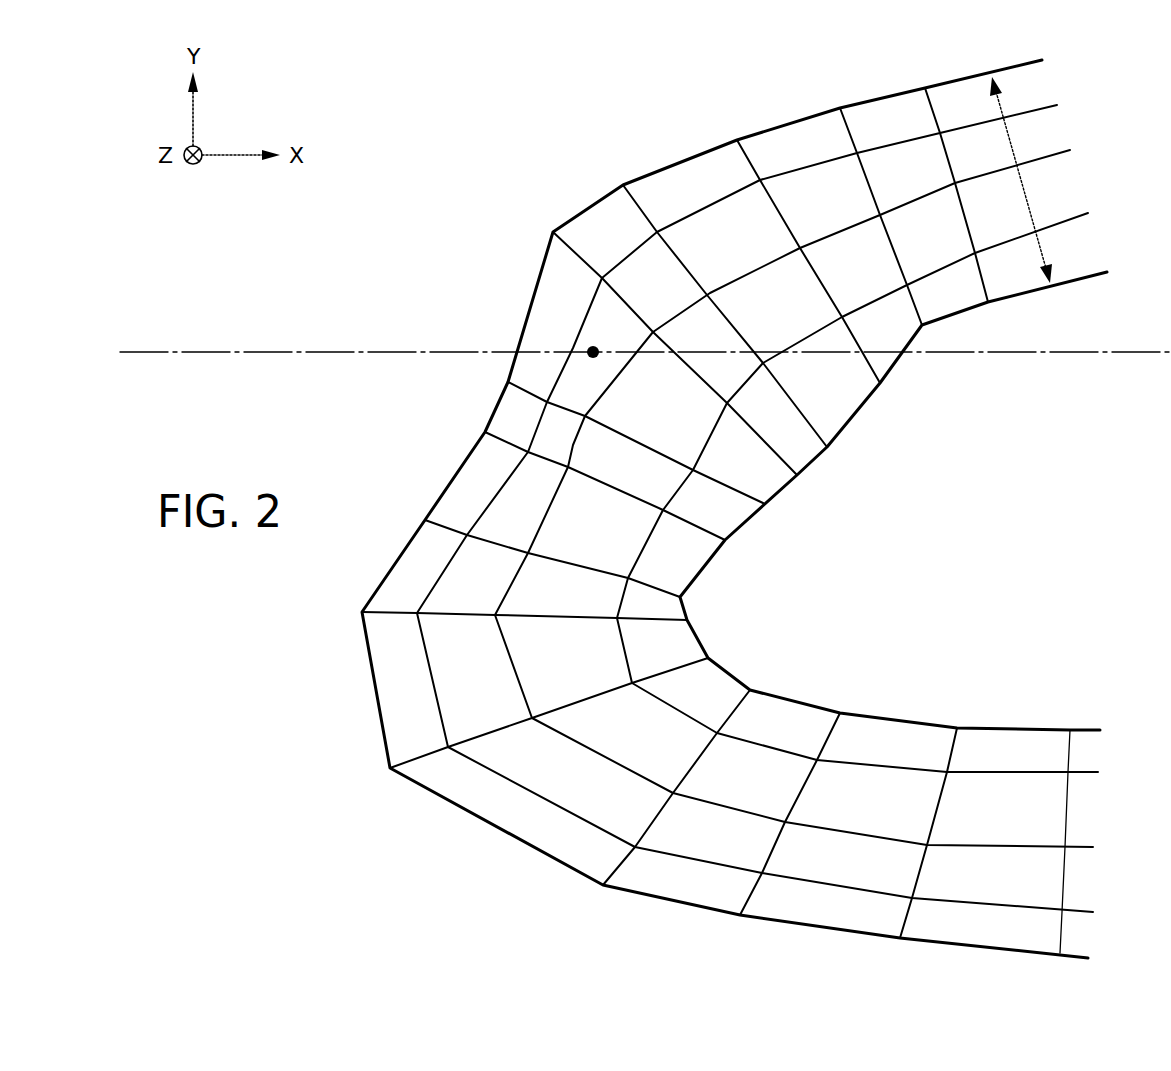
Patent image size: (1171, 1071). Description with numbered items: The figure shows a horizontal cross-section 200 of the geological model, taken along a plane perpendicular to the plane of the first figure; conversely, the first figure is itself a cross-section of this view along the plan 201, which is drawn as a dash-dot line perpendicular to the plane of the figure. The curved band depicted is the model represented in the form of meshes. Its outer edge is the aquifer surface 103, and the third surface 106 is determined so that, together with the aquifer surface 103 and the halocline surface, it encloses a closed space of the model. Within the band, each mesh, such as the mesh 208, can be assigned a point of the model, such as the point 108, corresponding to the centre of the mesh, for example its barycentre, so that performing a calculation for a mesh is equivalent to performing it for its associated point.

The horizontal cross-section 200 is at (566, 138).
The aquifer surface 103 is at (678, 160).
The third surface 106 is at (958, 312).
The mesh 208 is at (582, 313).
The point of the model 108 is at (597, 357).
The plan 201 is at (218, 350).